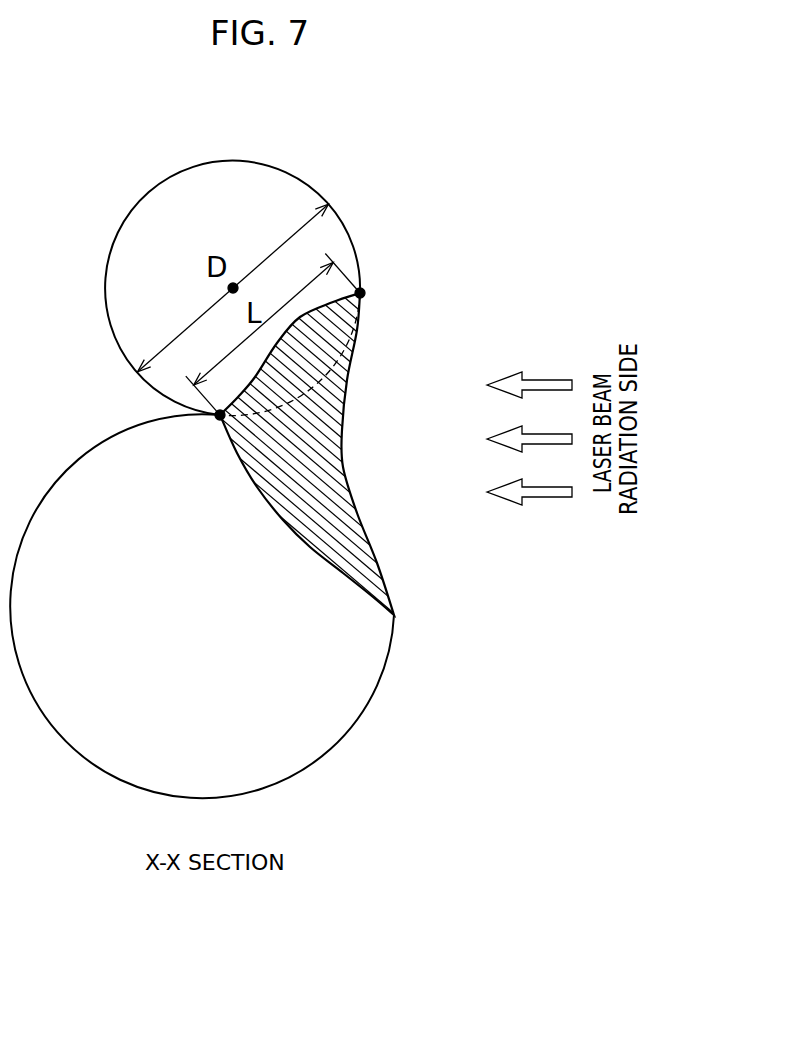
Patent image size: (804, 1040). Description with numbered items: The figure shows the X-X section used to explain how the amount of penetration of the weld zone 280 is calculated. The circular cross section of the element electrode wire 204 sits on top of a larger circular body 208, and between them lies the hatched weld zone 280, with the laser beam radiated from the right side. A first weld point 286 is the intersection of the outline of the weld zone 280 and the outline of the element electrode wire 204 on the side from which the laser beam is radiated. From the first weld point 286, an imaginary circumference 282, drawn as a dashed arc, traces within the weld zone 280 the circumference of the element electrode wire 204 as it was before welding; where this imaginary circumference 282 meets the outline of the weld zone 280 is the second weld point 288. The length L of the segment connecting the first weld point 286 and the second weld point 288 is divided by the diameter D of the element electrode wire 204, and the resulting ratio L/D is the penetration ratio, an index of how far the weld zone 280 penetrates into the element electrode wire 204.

The element electrode wire 204 is at (163, 262).
The optical fiber (second) 208 is at (330, 672).
The weld zone 280 is at (318, 442).
The imaginary circumference 282 is at (350, 355).
The first weld point 286 is at (364, 292).
The second weld point 288 is at (220, 415).